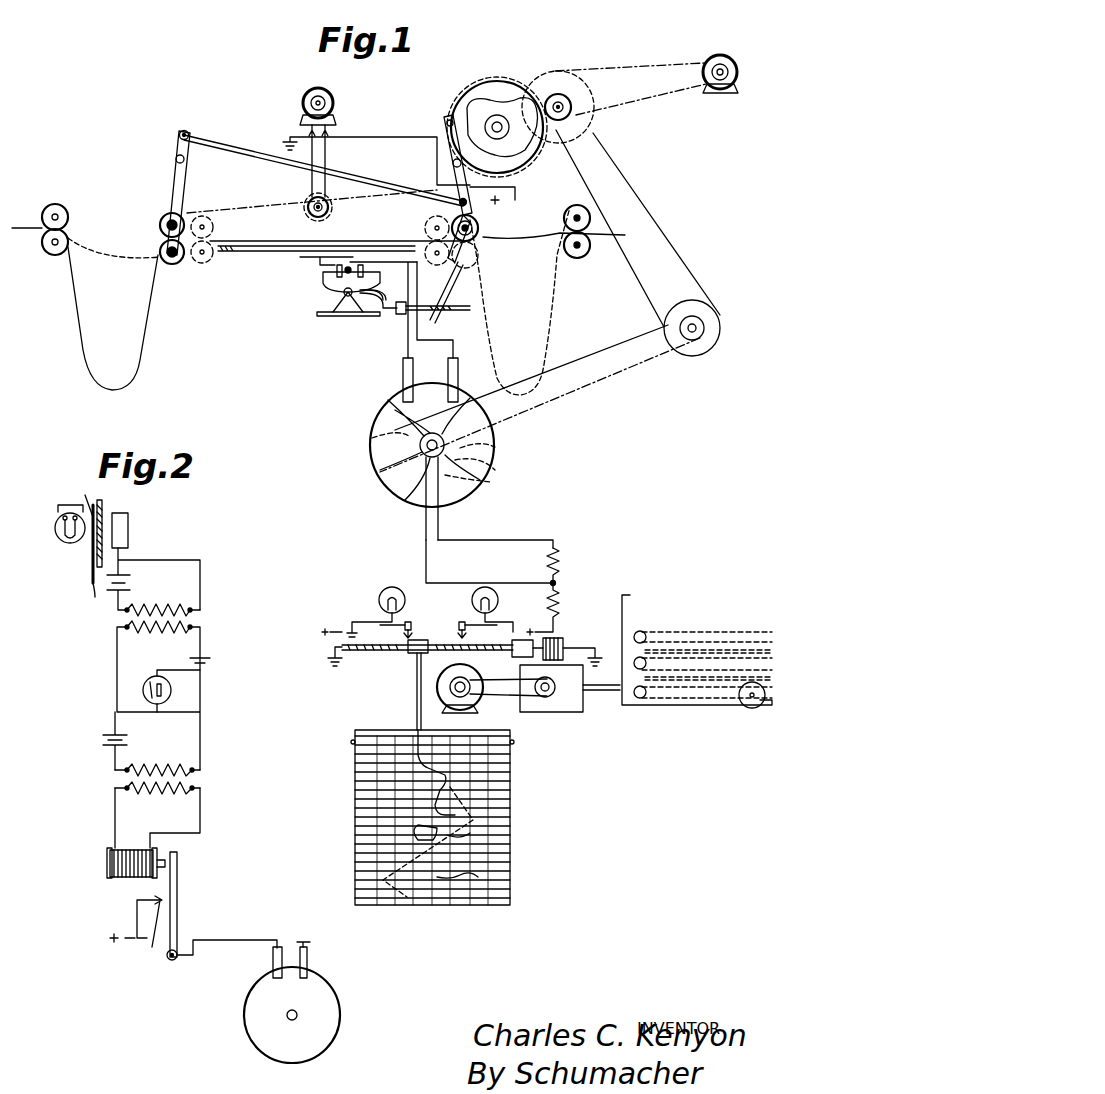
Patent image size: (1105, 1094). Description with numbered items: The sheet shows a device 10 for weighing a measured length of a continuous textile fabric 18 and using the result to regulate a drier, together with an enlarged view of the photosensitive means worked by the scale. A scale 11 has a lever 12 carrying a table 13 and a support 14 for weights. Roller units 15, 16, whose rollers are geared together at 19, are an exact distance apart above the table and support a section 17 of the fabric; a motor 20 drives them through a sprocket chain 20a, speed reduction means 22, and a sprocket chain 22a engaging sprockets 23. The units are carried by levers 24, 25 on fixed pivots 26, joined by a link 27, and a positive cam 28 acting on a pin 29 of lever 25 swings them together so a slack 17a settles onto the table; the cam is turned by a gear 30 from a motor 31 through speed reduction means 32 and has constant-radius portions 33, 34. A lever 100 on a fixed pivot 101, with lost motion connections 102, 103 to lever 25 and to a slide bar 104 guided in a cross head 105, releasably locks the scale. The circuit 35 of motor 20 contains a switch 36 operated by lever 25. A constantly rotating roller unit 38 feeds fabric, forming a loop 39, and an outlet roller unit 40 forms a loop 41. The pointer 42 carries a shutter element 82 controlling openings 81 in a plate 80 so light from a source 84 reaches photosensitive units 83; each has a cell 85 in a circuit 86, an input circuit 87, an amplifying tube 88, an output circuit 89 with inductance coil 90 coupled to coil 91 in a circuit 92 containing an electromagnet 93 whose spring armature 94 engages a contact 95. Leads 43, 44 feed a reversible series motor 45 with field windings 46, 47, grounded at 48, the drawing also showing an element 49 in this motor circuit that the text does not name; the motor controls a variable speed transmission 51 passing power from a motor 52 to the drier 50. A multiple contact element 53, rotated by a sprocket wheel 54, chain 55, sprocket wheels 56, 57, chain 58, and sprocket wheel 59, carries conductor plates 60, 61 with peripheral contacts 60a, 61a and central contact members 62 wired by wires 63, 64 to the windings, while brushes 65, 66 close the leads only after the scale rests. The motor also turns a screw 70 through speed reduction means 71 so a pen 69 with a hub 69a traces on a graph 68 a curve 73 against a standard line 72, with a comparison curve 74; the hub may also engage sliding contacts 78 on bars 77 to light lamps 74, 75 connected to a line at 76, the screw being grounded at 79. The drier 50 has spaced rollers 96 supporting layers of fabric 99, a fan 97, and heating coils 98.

In FIG. 1, the device 10 is at (80, 131).
In FIG. 1, the scale 11 is at (327, 326).
In FIG. 1, the lever 12 is at (320, 312).
In FIG. 1, the table 13 is at (247, 258).
In FIG. 1, the support for weights 14 is at (383, 283).
In FIG. 1, the roller unit 15 is at (150, 230).
In FIG. 1, the roller unit 16 is at (494, 232).
In FIG. 1, the section of fabric 17 is at (263, 232).
In FIG. 1, the slack 17a is at (214, 252).
In FIG. 1, the textile fabric 18 is at (482, 248).
In FIG. 1, the gearing 19 is at (160, 218).
In FIG. 1, the motor 20 is at (334, 97).
In FIG. 1, the sprocket chain 20a is at (328, 158).
In FIG. 1, the speed reduction means 22 is at (332, 212).
In FIG. 1, the sprocket chain 22a is at (243, 200).
In FIG. 1, the sprockets 23 is at (187, 193).
In FIG. 1, the lever 24 is at (178, 141).
In FIG. 1, the lever 25 is at (465, 140).
In FIG. 1, the fixed pivots 26 is at (176, 160).
In FIG. 1, the link 27 is at (224, 147).
In FIG. 1, the positive cam 28 is at (485, 77).
In FIG. 1, the pin 29 is at (450, 115).
In FIG. 1, the gear 30 is at (517, 73).
In FIG. 1, the motor 31 is at (724, 52).
In FIG. 1, the speed reduction means 32 is at (608, 109).
In FIG. 1, the cam portion 33 is at (497, 83).
In FIG. 1, the cam portion 34 is at (532, 158).
In FIG. 1, the circuit of motor 35 is at (380, 137).
In FIG. 1, the switch 36 is at (510, 200).
In FIG. 1, the roller unit 38 is at (589, 272).
In FIG. 1, the slack or loop 39 is at (565, 320).
In FIG. 1, the roller unit 40 is at (51, 192).
In FIG. 1, the slack or loop 41 is at (72, 331).
In FIG. 1, the pointer 42 is at (323, 282).
In FIG. 2, the pointer 42 is at (85, 495).
In FIG. 1, the lead 43 is at (408, 343).
In FIG. 2, the lead 43 is at (235, 940).
In FIG. 1, the lead 44 is at (420, 330).
In FIG. 1, the reversible series motor 45 is at (556, 640).
In FIG. 1, the field winding 46 is at (565, 560).
In FIG. 1, the field winding 47 is at (553, 588).
In FIG. 1, the ground 48 is at (595, 655).
In FIG. 1, the resistor 49 is at (565, 595).
In FIG. 1, the machine or drier 50 is at (637, 705).
In FIG. 1, the variable speed transmission 51 is at (571, 710).
In FIG. 1, the motor 52 is at (468, 697).
In FIG. 1, the multiple contact element 53 is at (350, 465).
In FIG. 2, the multiple contact element 53 is at (240, 1029).
In FIG. 1, the sprocket wheel 54 is at (500, 448).
In FIG. 1, the sprocket chain 55 is at (595, 400).
In FIG. 1, the sprocket wheel 56 is at (700, 350).
In FIG. 1, the sprocket wheel 57 is at (721, 328).
In FIG. 1, the sprocket chain 58 is at (657, 228).
In FIG. 1, the sprocket wheel 59 is at (597, 140).
In FIG. 1, the conductor plate 60 is at (405, 437).
In FIG. 1, the contacts 60a is at (385, 485).
In FIG. 1, the conductor plate 61 is at (495, 470).
In FIG. 1, the contacts 61a is at (490, 482).
In FIG. 1, the central contact members 62 is at (420, 455).
In FIG. 1, the wire 63 is at (424, 560).
In FIG. 1, the wire 64 is at (485, 540).
In FIG. 1, the brush 65 is at (404, 378).
In FIG. 2, the brush 65 is at (273, 958).
In FIG. 1, the brush 66 is at (458, 372).
In FIG. 2, the brush 66 is at (307, 960).
In FIG. 1, the graph 68 is at (358, 787).
In FIG. 1, the pen 69 is at (417, 708).
In FIG. 1, the hub 69a is at (413, 658).
In FIG. 1, the screw 70 is at (370, 653).
In FIG. 1, the speed reduction means 71 is at (522, 657).
In FIG. 1, the line of standard performance 72 is at (478, 877).
In FIG. 1, the curve 73 is at (420, 827).
In FIG. 1, the curve / lamp 74 is at (383, 595).
In FIG. 1, the lamp 75 is at (478, 605).
In FIG. 1, the line circuit connection 76 is at (322, 632).
In FIG. 1, the bar 77 is at (410, 622).
In FIG. 1, the sliding adjustable contact 78 is at (458, 632).
In FIG. 1, the ground 79 is at (330, 668).
In FIG. 1, the plate 80 is at (348, 263).
In FIG. 2, the plate 80 is at (88, 582).
In FIG. 2, the openings 81 is at (95, 555).
In FIG. 1, the shutter element 82 is at (350, 262).
In FIG. 1, the photosensitive units 83 is at (335, 270).
In FIG. 2, the photosensitive units 83 is at (87, 741).
In FIG. 2, the light source 84 is at (57, 540).
In FIG. 2, the photosensitive cell 85 is at (128, 532).
In FIG. 2, the circuit 86 is at (200, 587).
In FIG. 2, the input circuit 87 is at (115, 668).
In FIG. 2, the amplifying tube 88 is at (173, 695).
In FIG. 2, the output circuit 89 is at (113, 757).
In FIG. 2, the inductance coil 90 is at (182, 768).
In FIG. 2, the inductance coil 91 is at (178, 788).
In FIG. 2, the circuit 92 is at (113, 823).
In FIG. 2, the electromagnet 93 is at (110, 863).
In FIG. 2, the spring armature 94 is at (178, 893).
In FIG. 2, the contact 95 is at (155, 938).
In FIG. 1, the rollers 96 is at (645, 635).
In FIG. 1, the fan 97 is at (738, 707).
In FIG. 1, the heating coils 98 is at (705, 650).
In FIG. 1, the layers of fabric 99 is at (727, 648).
In FIG. 1, the lever 100 is at (458, 277).
In FIG. 1, the fixed pivot 101 is at (467, 290).
In FIG. 1, the lost motion connection 102 is at (478, 257).
In FIG. 1, the lost motion connection 103 is at (462, 312).
In FIG. 1, the slide bar 104 is at (390, 313).
In FIG. 1, the cross head 105 is at (403, 317).